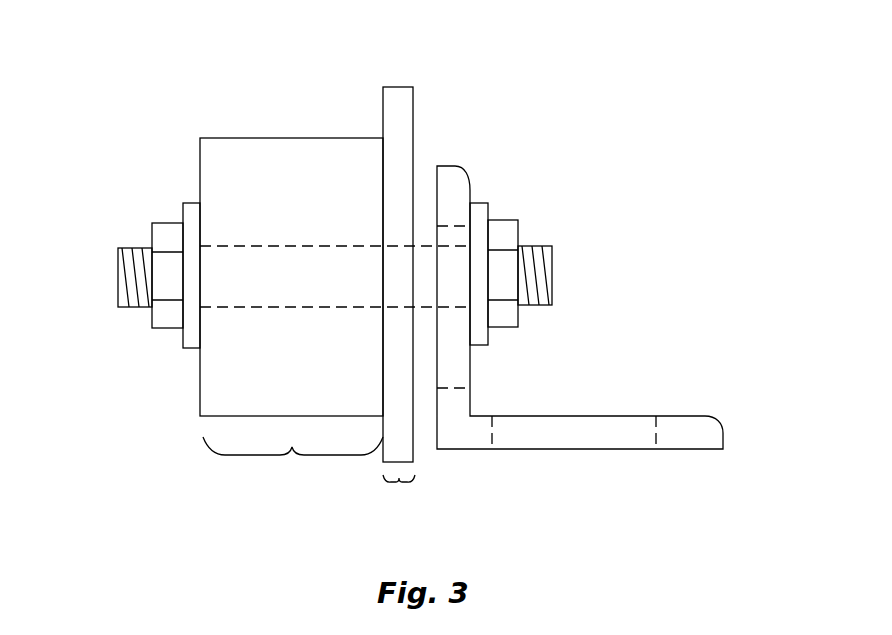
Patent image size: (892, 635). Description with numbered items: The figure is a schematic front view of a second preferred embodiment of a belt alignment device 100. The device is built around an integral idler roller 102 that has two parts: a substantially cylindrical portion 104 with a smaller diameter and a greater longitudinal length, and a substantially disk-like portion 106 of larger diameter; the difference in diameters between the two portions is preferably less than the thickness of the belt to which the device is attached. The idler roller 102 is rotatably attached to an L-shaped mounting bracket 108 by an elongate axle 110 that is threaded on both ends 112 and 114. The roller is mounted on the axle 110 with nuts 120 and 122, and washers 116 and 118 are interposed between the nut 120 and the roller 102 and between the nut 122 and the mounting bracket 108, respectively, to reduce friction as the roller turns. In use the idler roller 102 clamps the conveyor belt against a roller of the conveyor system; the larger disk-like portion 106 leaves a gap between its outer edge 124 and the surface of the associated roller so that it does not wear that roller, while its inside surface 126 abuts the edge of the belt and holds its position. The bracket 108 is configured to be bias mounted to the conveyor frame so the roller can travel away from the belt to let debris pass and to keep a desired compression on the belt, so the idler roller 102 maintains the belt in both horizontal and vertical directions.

The belt alignment device 100 is at (530, 96).
The idler roller 102 is at (232, 138).
The cylindrical portion 104 is at (293, 465).
The disk-like portion 106 is at (404, 493).
The mounting bracket 108 is at (478, 450).
The axle 110 is at (542, 247).
The threaded end 112 is at (122, 310).
The threaded end 114 is at (545, 307).
The washer 116 is at (183, 203).
The washer 118 is at (488, 203).
The nut 120 is at (160, 328).
The nut 122 is at (507, 328).
The outer edge 124 is at (402, 87).
The inside surface 126 is at (380, 113).